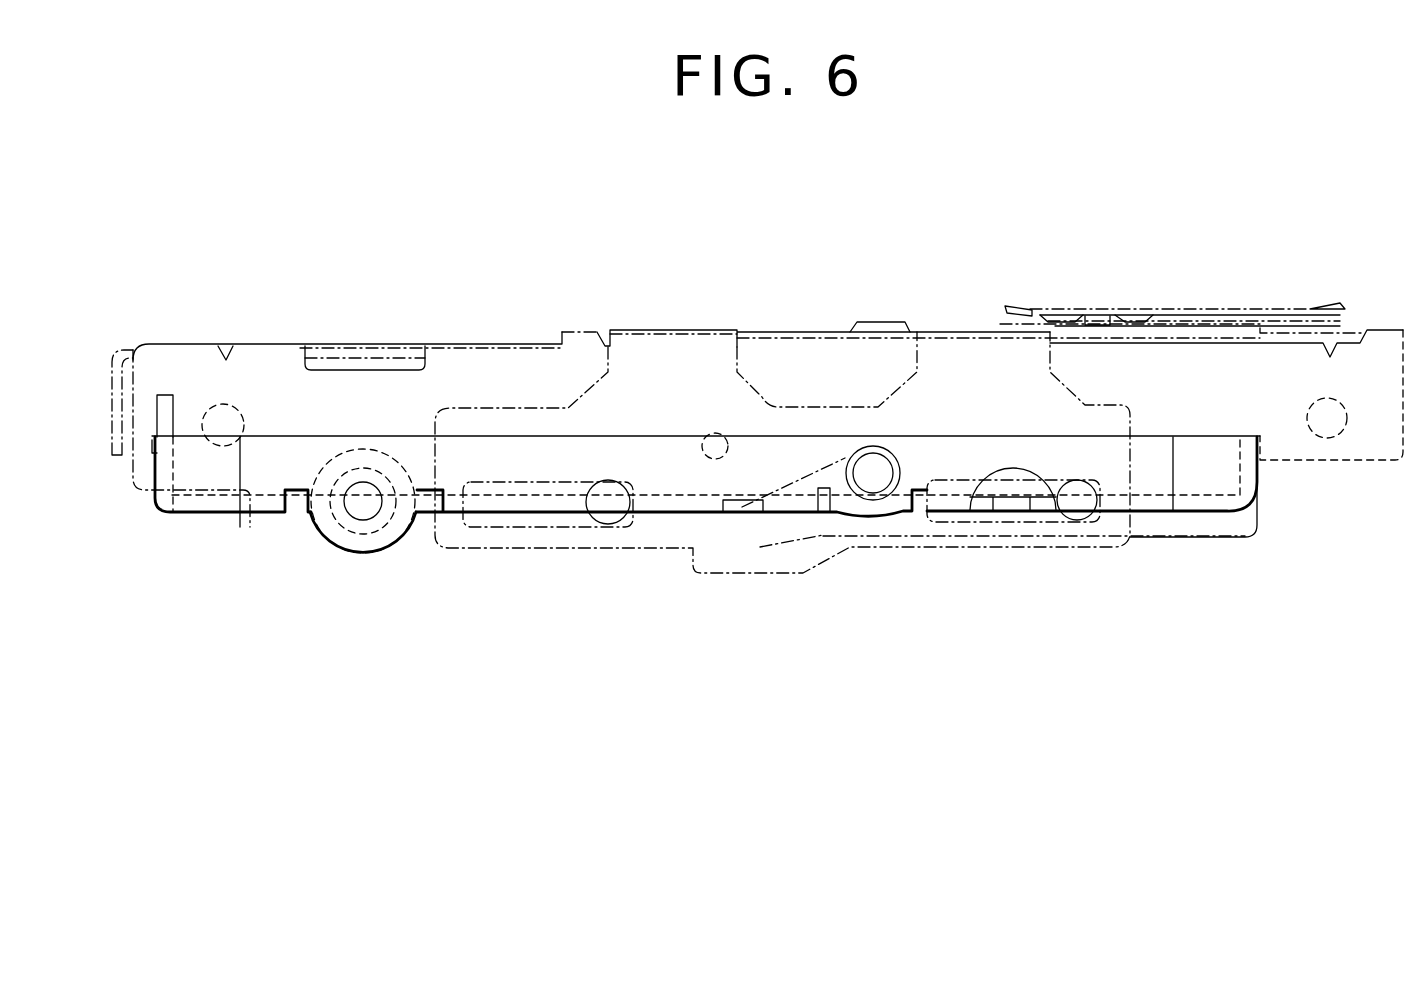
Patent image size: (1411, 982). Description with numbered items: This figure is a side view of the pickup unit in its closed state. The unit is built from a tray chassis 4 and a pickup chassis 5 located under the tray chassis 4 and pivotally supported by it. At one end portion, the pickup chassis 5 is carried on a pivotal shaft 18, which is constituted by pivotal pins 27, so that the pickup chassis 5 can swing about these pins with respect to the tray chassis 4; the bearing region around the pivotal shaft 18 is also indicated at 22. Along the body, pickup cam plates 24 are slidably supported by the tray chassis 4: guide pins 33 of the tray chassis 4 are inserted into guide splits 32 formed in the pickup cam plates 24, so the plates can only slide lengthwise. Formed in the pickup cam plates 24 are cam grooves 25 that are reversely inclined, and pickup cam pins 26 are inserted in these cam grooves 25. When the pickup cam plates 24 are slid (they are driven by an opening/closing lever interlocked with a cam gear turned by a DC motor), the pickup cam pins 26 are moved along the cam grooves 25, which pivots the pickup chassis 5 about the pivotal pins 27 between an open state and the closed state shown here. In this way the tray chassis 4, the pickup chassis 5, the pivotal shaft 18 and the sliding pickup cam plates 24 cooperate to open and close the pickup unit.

The tray chassis 4 is at (200, 343).
The pickup chassis 5 is at (182, 515).
The pivotal shaft 18 is at (368, 522).
The bearing portion 22 is at (352, 512).
The pickup cam plate 24 is at (668, 362).
The cam groove 25 is at (800, 528).
The pickup cam pin 26 is at (882, 480).
The pivotal pin 27 is at (378, 506).
The guide split 32 is at (545, 517).
The guide pin 33 is at (612, 517).